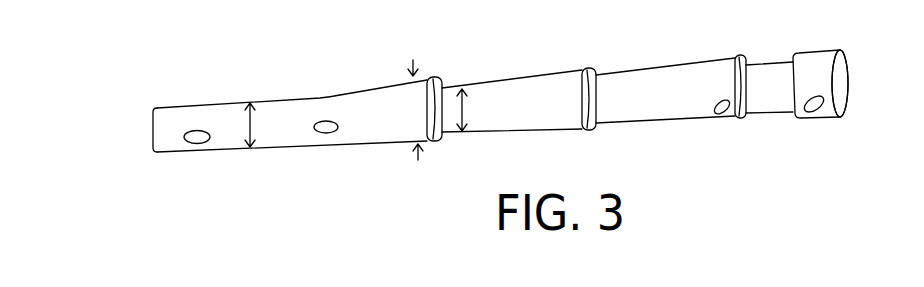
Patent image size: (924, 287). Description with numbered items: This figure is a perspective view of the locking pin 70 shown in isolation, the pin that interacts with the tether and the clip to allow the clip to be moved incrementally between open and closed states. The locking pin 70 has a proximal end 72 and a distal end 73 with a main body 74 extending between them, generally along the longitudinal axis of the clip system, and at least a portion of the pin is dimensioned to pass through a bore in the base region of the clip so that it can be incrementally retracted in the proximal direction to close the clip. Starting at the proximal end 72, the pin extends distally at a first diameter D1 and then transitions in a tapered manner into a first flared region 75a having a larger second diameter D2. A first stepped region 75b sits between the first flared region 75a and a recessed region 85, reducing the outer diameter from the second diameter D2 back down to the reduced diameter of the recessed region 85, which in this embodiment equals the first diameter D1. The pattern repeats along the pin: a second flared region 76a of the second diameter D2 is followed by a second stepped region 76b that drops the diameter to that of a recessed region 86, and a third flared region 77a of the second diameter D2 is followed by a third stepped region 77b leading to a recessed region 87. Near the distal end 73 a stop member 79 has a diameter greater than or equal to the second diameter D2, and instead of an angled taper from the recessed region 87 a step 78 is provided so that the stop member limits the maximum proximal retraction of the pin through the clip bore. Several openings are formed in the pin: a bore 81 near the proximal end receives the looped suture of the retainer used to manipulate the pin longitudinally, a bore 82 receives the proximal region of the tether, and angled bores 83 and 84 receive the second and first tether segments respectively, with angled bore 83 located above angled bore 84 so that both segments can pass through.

The locking pin 70 is at (250, 81).
The proximal end 72 is at (153, 128).
The distal end 73 is at (843, 92).
The main body 74 is at (289, 100).
The first flared region 75a is at (420, 98).
The first stepped region 75b is at (443, 140).
The second flared region 76a is at (578, 85).
The second stepped region 76b is at (592, 70).
The third flared region 77a is at (735, 60).
The third stepped region 77b is at (748, 117).
The step 78 is at (788, 52).
The stop member 79 is at (823, 72).
The bore 81 is at (195, 137).
The bore 82 is at (324, 130).
The angled bore 83 is at (720, 112).
The angled bore 84 is at (812, 112).
The recessed region 85 is at (482, 85).
The recessed region 86 is at (620, 112).
The recessed region 87 is at (770, 72).
The first diameter D1 is at (372, 118).
The second diameter D2 is at (413, 98).